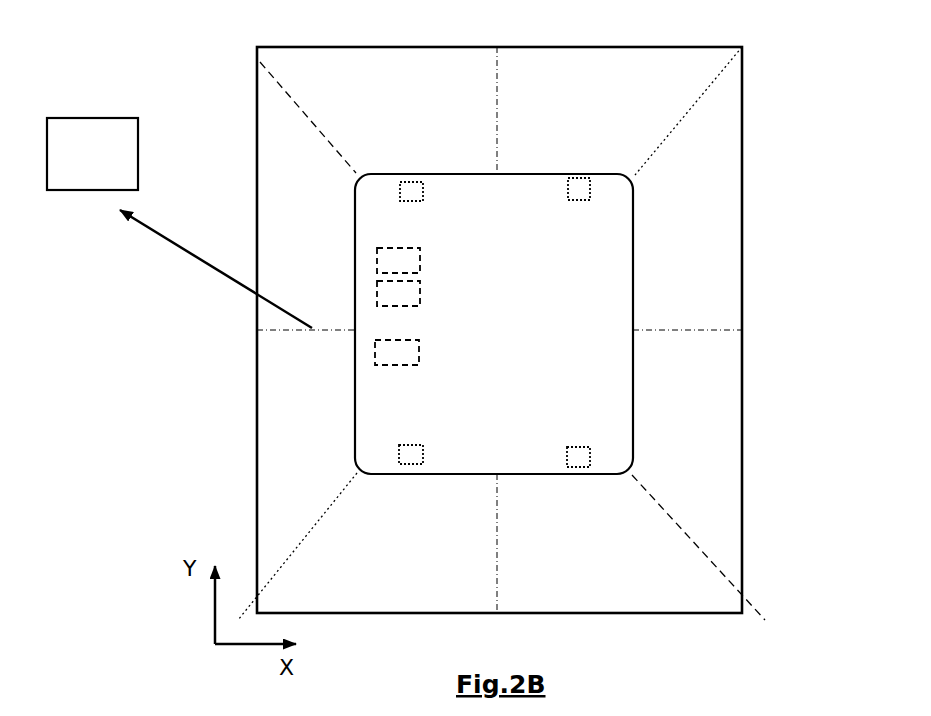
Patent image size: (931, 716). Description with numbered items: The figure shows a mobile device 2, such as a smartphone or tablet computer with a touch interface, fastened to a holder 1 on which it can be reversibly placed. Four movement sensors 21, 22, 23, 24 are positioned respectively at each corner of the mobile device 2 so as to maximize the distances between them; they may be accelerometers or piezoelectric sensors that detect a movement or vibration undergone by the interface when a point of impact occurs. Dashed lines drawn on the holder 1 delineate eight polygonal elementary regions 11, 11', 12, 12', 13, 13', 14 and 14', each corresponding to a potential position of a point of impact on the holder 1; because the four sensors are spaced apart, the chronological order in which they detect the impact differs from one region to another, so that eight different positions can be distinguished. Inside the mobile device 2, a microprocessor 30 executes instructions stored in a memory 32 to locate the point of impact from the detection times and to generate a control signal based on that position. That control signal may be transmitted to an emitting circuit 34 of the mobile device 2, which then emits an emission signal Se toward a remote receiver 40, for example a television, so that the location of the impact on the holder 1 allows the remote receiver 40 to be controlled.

The holder 1 is at (687, 165).
The mobile device 2 is at (515, 190).
The elementary region 11 is at (602, 567).
The elementary region 11' is at (725, 500).
The elementary region 12 is at (335, 568).
The elementary region 12' is at (269, 393).
The elementary region 13 is at (333, 90).
The elementary region 13' is at (249, 215).
The elementary region 14 is at (557, 86).
The elementary region 14' is at (731, 188).
The movement sensor 21 is at (587, 458).
The movement sensor 22 is at (414, 466).
The movement sensor 23 is at (398, 196).
The movement sensor 24 is at (594, 190).
The microprocessor 30 is at (375, 260).
The memory 32 is at (375, 294).
The emitting circuit 34 is at (373, 353).
The remote receiver 40 is at (118, 150).
The emission signal Se is at (224, 283).